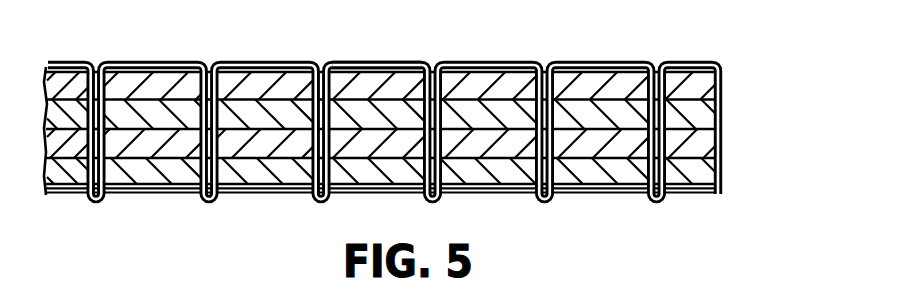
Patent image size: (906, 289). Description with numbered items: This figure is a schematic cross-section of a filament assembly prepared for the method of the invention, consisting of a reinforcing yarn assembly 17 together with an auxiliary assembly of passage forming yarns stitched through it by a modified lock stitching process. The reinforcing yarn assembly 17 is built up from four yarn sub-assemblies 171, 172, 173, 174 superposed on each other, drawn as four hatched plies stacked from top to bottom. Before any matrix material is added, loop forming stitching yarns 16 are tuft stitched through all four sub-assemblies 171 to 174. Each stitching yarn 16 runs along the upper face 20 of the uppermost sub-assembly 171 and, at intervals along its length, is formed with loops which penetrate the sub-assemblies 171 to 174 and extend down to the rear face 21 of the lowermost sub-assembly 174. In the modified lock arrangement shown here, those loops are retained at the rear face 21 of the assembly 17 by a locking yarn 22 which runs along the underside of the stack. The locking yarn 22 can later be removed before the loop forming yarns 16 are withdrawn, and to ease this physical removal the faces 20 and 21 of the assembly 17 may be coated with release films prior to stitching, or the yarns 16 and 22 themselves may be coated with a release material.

The loop forming stitching yarn 16 is at (266, 62).
The reinforcing yarn assembly 17 is at (528, 55).
The upper face 20 is at (395, 66).
The rear face 21 is at (153, 194).
The locking yarn 22 is at (275, 197).
The first yarn sub-assembly 171 is at (699, 83).
The second yarn sub-assembly 172 is at (701, 113).
The third yarn sub-assembly 173 is at (701, 148).
The fourth yarn sub-assembly 174 is at (702, 175).